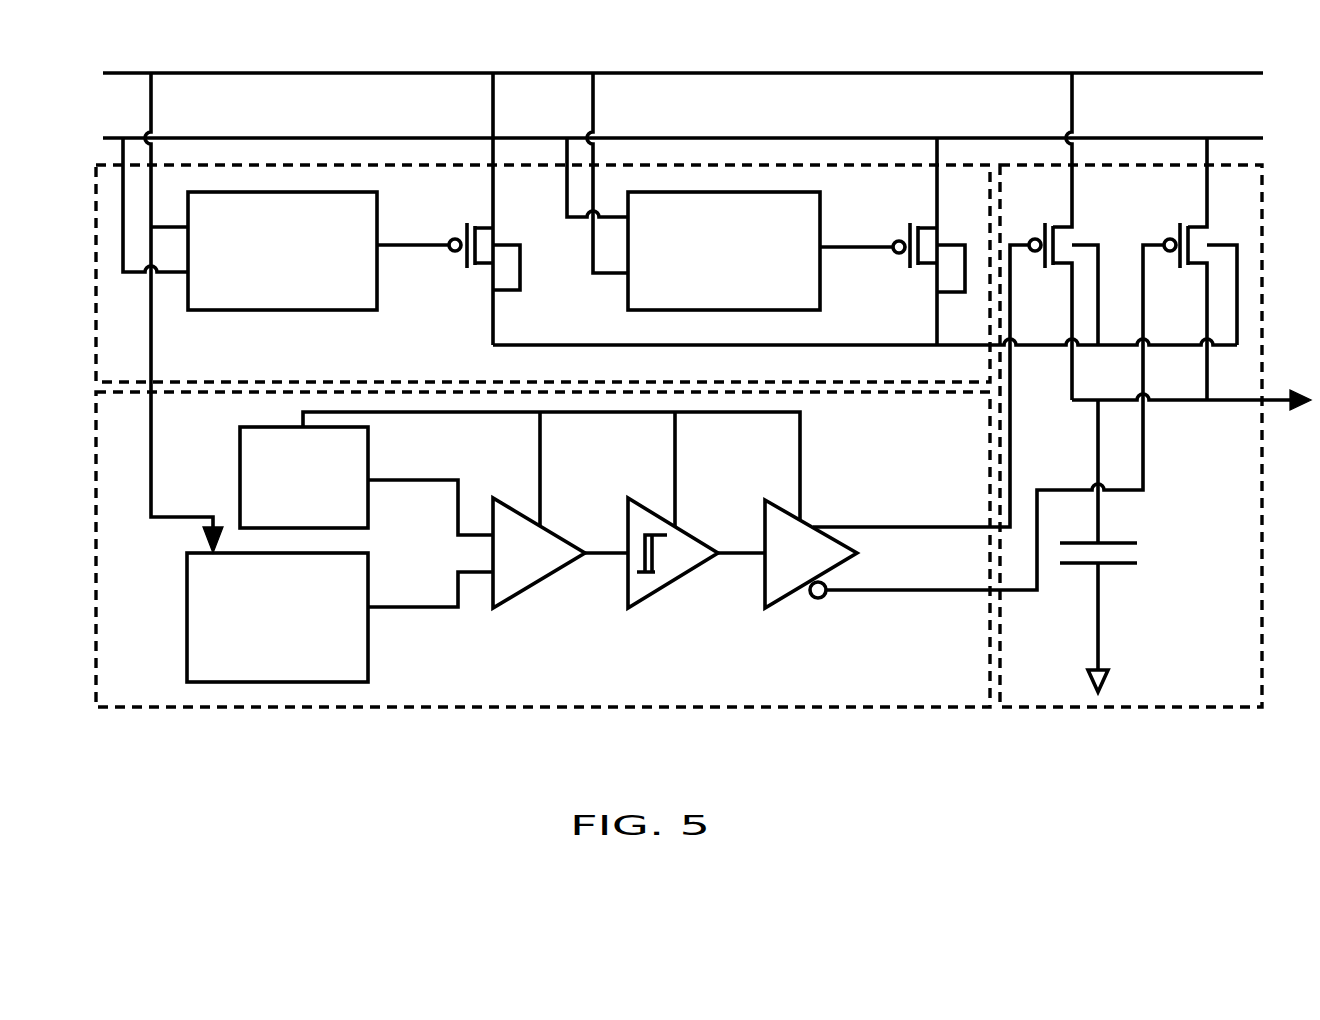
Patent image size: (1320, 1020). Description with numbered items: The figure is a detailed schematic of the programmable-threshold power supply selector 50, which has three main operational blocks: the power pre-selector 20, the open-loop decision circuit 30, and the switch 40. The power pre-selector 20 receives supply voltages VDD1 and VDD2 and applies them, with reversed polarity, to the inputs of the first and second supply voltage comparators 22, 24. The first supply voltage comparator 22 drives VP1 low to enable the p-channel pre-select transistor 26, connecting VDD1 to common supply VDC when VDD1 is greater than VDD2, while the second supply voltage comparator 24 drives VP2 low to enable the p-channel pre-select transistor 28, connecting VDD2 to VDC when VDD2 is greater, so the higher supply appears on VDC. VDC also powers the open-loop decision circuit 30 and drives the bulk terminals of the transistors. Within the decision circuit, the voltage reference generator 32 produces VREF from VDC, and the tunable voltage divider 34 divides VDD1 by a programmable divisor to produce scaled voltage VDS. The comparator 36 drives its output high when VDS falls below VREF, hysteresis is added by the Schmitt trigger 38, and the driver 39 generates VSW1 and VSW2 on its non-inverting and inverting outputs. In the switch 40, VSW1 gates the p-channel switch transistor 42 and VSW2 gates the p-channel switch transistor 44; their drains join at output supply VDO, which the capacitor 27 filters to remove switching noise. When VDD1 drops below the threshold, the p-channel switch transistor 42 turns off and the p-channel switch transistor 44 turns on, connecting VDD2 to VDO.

The power pre-selector 20 is at (436, 341).
The first supply voltage comparator 22 is at (362, 231).
The second supply voltage comparator 24 is at (804, 231).
The p-channel pre-select transistor 26 is at (487, 243).
The capacitor 27 is at (1117, 565).
The p-channel pre-select transistor 28 is at (932, 243).
The open-loop decision circuit 30 is at (771, 677).
The voltage reference generator 32 is at (352, 513).
The tunable voltage divider 34 is at (352, 668).
The comparator 36 is at (552, 569).
The Schmitt trigger 38 is at (678, 580).
The driver 39 is at (805, 569).
The switch 40 is at (1230, 642).
The p-channel switch transistor 42 is at (1067, 243).
The p-channel switch transistor 44 is at (1202, 243).
The programmable-threshold power supply selector 50 is at (310, 757).